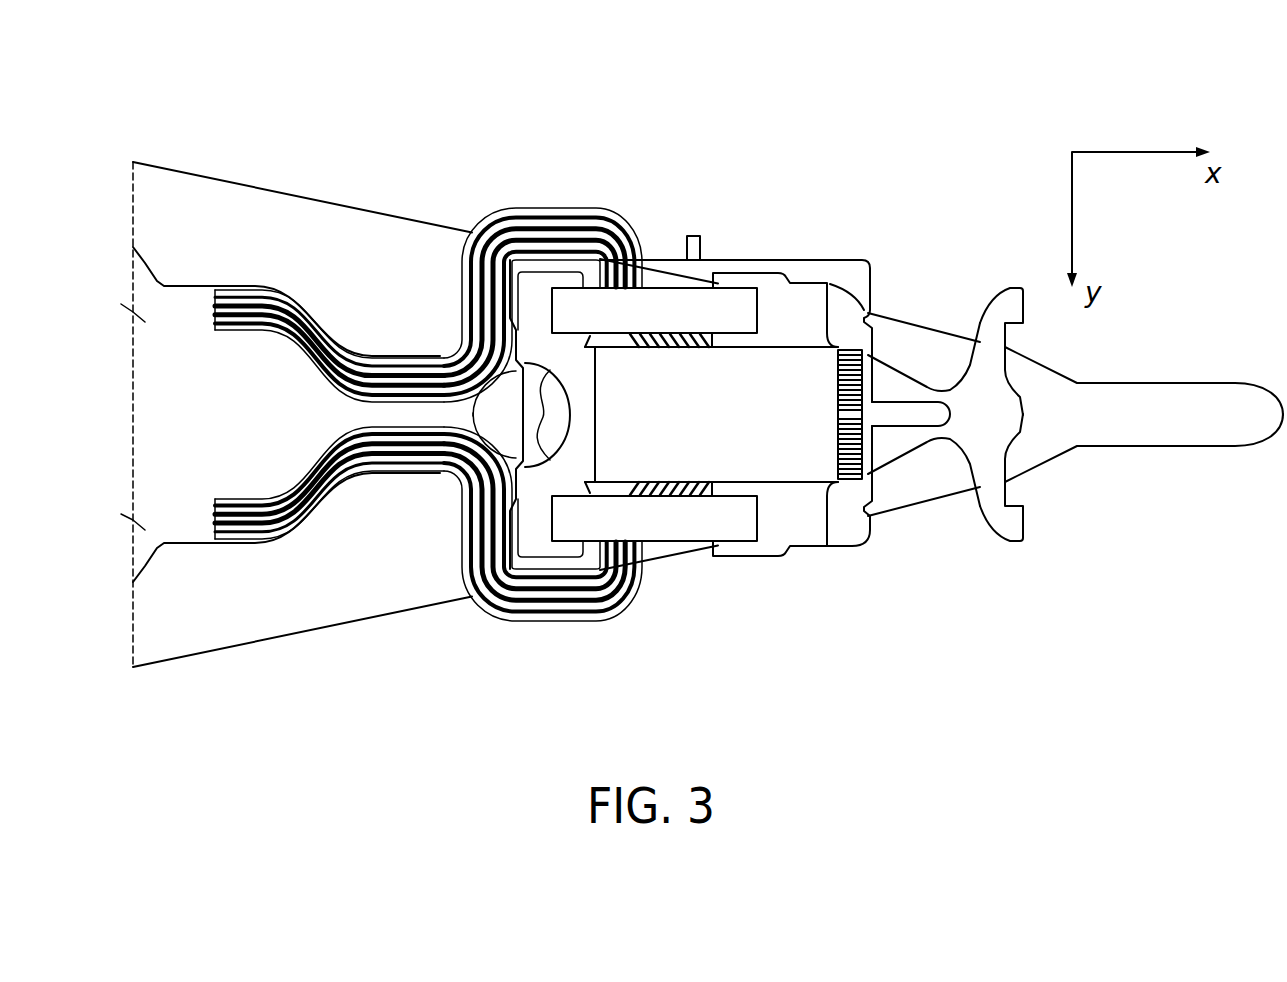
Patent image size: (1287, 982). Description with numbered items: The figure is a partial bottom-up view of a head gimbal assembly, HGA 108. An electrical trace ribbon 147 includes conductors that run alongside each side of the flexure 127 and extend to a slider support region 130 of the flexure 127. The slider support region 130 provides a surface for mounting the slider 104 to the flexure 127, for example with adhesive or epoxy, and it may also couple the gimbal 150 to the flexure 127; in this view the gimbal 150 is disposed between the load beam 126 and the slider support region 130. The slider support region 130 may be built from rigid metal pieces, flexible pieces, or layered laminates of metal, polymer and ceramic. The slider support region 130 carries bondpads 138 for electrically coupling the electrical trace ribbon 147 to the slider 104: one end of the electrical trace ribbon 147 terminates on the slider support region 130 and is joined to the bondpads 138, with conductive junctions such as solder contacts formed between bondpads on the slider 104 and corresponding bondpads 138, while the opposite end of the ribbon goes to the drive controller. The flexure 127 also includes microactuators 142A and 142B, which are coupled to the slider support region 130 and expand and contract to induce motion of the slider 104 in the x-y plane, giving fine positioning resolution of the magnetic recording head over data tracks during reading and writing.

The slider 104 is at (770, 447).
The HGA 108 is at (770, 103).
The load beam 126 is at (368, 193).
The flexure 127 is at (412, 531).
The slider support region 130 is at (700, 237).
The bondpads 138 is at (870, 322).
The microactuator 142A is at (673, 527).
The microactuator 142B is at (667, 292).
The electrical trace ribbon 147 is at (563, 206).
The gimbal 150 is at (497, 418).